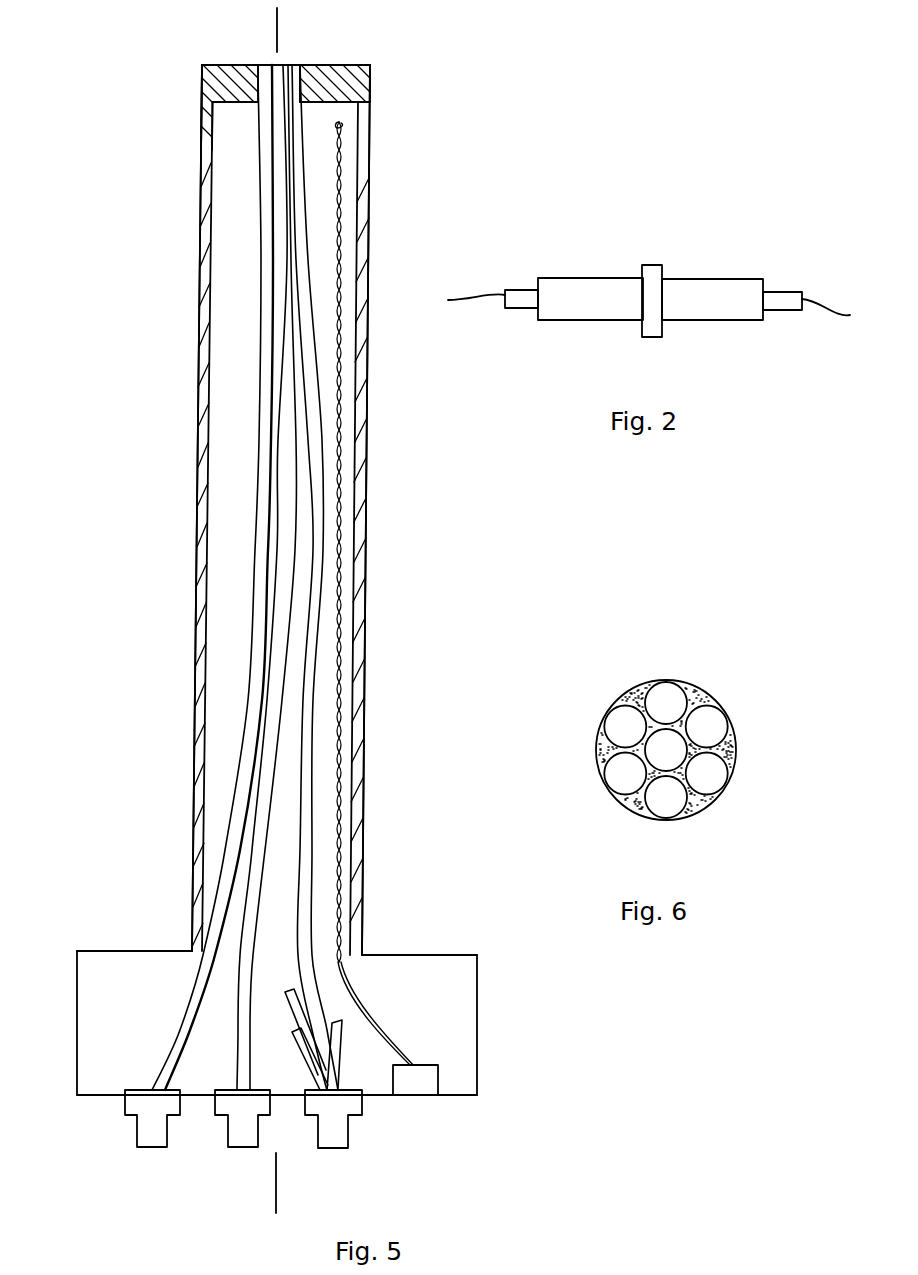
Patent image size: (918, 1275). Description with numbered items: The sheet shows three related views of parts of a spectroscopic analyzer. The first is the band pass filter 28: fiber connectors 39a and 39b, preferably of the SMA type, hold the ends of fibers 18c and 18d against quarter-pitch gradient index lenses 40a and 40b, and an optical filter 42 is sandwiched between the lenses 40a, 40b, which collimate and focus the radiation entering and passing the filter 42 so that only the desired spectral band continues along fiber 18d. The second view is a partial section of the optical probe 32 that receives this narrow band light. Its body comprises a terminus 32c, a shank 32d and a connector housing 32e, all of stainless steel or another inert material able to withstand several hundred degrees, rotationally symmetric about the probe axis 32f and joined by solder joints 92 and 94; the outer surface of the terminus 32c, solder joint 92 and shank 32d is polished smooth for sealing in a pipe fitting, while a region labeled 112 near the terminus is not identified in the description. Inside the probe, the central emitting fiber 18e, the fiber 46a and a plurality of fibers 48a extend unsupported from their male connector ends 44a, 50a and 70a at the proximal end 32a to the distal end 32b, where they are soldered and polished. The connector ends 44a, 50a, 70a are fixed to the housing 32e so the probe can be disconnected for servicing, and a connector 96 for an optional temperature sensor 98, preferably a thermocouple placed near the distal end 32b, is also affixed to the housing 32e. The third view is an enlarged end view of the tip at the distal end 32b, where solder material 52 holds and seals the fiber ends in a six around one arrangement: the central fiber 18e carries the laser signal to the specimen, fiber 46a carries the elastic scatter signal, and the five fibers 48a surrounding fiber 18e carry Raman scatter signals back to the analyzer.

In FIG. 5, the optical probe 32 is at (410, 497).
In FIG. 5, the proximal end of probe 32a is at (90, 1095).
In FIG. 5, the distal end of probe 32b is at (340, 65).
In FIG. 5, the terminus 32c is at (356, 90).
In FIG. 5, the shank 32d is at (198, 590).
In FIG. 5, the connector housing 32e is at (418, 955).
In FIG. 5, the probe axis 32f is at (275, 29).
In FIG. 5, the sleeve 112 is at (201, 124).
In FIG. 5, the solder joint 92 is at (358, 152).
In FIG. 5, the solder joint 94 is at (192, 948).
In FIG. 5, the connector 96 is at (417, 1082).
In FIG. 5, the temperature sensor 98 is at (345, 125).
In FIG. 5, the fiber 46a is at (262, 283).
In FIG. 6, the fiber 46a is at (664, 701).
In FIG. 5, the fiber 18e is at (285, 345).
In FIG. 6, the fiber 18e is at (660, 748).
In FIG. 5, the fibers 48a is at (312, 399).
In FIG. 6, the fibers 48a is at (618, 728).
In FIG. 5, the male connector end 50a is at (148, 1133).
In FIG. 5, the male connector end 44a is at (238, 1130).
In FIG. 5, the male connector end 70a is at (330, 1123).
In FIG. 2, the band pass filter 28 is at (606, 225).
In FIG. 2, the fiber 18c is at (477, 296).
In FIG. 2, the fiber 18d is at (825, 298).
In FIG. 2, the fiber connector 39a is at (517, 302).
In FIG. 2, the fiber connector 39b is at (778, 298).
In FIG. 2, the GRIN lens 40a is at (560, 305).
In FIG. 2, the GRIN lens 40b is at (702, 307).
In FIG. 2, the optical filter 42 is at (648, 270).
In FIG. 6, the solder material 52 is at (705, 688).